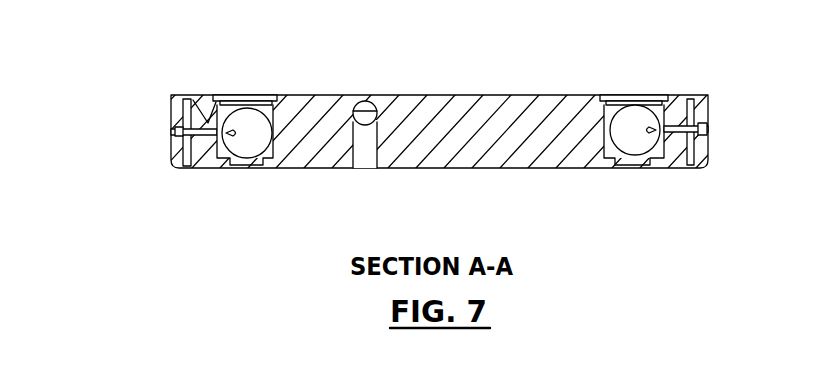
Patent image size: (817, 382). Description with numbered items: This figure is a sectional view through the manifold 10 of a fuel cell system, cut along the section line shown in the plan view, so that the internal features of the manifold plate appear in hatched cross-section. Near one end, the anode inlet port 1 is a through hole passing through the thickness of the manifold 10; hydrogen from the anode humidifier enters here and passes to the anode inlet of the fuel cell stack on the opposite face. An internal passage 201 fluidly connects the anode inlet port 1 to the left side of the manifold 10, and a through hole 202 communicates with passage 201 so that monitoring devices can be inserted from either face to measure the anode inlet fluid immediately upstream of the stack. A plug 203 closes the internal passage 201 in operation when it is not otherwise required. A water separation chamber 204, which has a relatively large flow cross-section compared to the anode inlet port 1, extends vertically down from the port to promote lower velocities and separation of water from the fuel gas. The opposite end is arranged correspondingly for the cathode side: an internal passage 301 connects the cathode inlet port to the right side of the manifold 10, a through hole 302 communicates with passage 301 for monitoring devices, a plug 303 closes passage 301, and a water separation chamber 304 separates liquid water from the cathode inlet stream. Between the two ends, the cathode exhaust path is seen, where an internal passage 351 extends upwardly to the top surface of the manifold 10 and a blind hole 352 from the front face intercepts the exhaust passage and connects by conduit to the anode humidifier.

The manifold 10 is at (522, 60).
The anode inlet port 1 is at (248, 167).
The internal passage 201 is at (200, 96).
The through hole 202 is at (172, 115).
The plug 203 is at (172, 131).
The water separation chamber 204 is at (256, 113).
The internal passage 301 is at (680, 114).
The through hole 302 is at (713, 103).
The plug 303 is at (713, 132).
The water separation chamber 304 is at (628, 123).
The internal passage 351 is at (364, 108).
The blind hole 352 is at (368, 168).